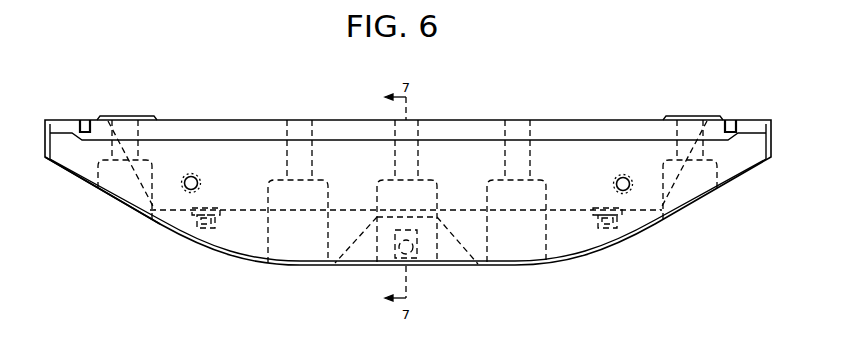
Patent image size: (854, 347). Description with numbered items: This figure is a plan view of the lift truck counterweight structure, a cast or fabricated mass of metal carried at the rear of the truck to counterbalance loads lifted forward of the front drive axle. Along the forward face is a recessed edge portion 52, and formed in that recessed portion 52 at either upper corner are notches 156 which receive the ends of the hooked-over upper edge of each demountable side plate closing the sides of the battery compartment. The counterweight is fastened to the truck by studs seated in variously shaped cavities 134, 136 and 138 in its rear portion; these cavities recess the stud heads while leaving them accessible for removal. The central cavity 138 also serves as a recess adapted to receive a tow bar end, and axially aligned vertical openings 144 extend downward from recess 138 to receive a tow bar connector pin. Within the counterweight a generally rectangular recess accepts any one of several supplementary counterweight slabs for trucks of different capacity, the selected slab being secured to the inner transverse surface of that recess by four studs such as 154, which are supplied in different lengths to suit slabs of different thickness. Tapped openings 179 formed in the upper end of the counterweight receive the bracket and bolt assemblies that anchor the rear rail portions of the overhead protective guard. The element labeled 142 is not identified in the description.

The recessed edge portion 52 is at (595, 130).
The notches 156 is at (84, 121).
The cavity 134 is at (267, 266).
The cavity 136 is at (97, 196).
The cavity 138 is at (432, 198).
The brace 142 is at (463, 250).
The vertical openings 144 is at (414, 280).
The studs 154 is at (212, 206).
The tapped openings 179 is at (191, 176).